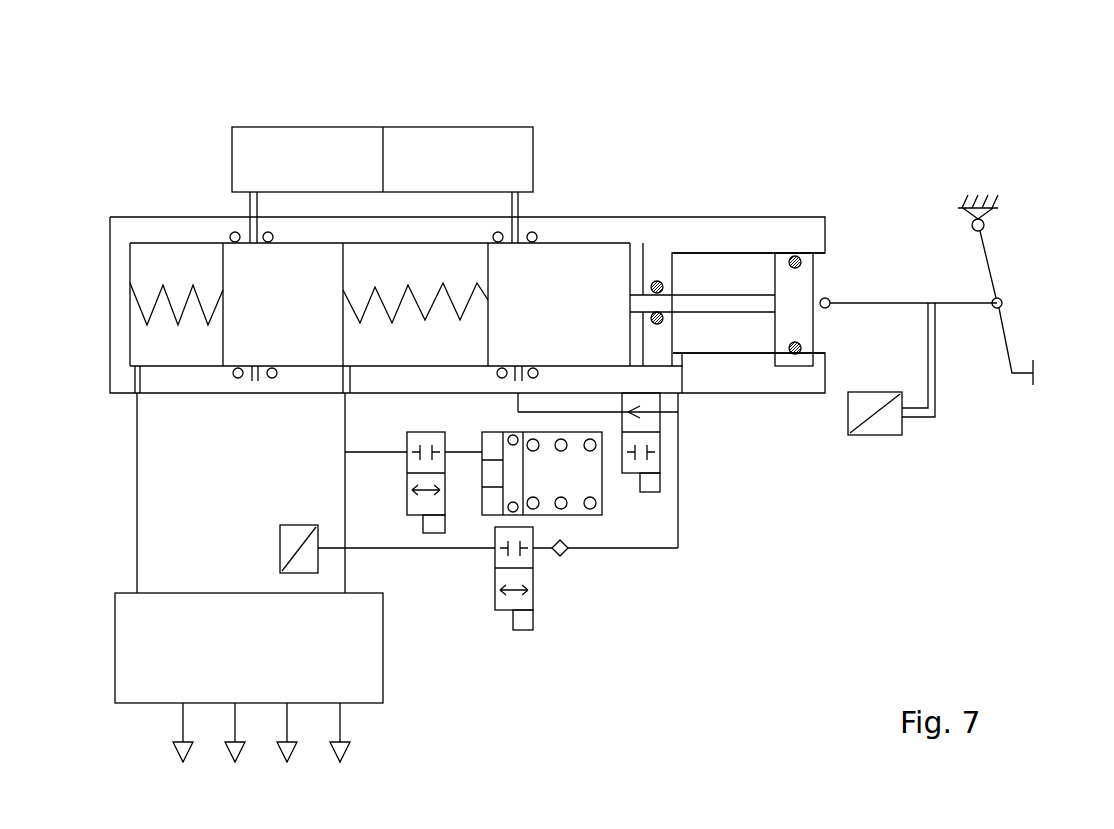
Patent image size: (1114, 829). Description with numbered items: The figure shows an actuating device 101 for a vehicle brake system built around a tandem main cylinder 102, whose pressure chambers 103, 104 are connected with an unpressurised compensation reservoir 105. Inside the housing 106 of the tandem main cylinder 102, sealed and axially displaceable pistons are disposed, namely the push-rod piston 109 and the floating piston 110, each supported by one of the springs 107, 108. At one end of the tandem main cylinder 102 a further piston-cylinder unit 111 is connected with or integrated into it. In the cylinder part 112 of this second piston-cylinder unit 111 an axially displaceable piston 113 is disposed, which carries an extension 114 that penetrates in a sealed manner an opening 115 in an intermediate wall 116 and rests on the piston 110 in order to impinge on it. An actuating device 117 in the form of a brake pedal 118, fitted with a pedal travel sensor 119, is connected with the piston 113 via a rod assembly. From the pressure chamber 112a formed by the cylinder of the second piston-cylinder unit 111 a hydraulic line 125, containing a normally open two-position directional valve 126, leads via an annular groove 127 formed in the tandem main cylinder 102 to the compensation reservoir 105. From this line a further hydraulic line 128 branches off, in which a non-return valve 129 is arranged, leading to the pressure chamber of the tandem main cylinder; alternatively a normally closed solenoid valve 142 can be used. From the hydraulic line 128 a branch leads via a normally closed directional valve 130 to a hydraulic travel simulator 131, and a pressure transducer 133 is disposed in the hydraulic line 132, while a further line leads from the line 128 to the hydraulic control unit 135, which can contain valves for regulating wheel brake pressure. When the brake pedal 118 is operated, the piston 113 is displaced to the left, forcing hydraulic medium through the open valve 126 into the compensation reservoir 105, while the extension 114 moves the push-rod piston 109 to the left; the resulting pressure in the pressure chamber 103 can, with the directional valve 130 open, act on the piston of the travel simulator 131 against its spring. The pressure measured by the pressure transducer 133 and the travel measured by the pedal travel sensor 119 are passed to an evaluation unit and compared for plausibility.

The actuating device 101 is at (748, 156).
The tandem main cylinder 102 is at (118, 201).
The pressure chamber 103 is at (440, 270).
The pressure chamber 104 is at (158, 343).
The compensation reservoir 105 is at (318, 172).
The housing 106 is at (118, 268).
The spring 107 is at (373, 287).
The spring 108 is at (163, 287).
The push-rod piston 109 is at (558, 268).
The floating piston 110 is at (263, 285).
The piston-cylinder unit 111 is at (744, 418).
The cylinder part 112 is at (785, 233).
The pressure chamber 112a is at (760, 330).
The piston 113 is at (815, 280).
The extension 114 is at (728, 300).
The opening 115 is at (658, 285).
The intermediate wall 116 is at (657, 342).
The actuating device 117 is at (1014, 270).
The brake pedal 118 is at (1008, 333).
The pedal travel sensor 119 is at (882, 435).
The hydraulic line 125 is at (608, 413).
The 2/2-way valve 126 is at (630, 453).
The annular groove 127 is at (530, 222).
The hydraulic line 128 is at (678, 545).
The non-return valve 129 is at (560, 556).
The 2/2-way valve 130 is at (443, 513).
The travel simulator 131 is at (590, 513).
The hydraulic line 132 is at (335, 548).
The pressure transducer 133 is at (293, 537).
The HCU 135 is at (340, 648).
The solenoid valve 142 is at (523, 612).